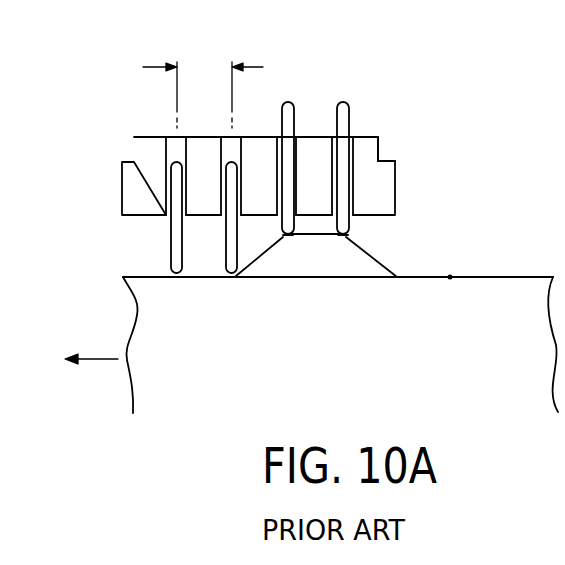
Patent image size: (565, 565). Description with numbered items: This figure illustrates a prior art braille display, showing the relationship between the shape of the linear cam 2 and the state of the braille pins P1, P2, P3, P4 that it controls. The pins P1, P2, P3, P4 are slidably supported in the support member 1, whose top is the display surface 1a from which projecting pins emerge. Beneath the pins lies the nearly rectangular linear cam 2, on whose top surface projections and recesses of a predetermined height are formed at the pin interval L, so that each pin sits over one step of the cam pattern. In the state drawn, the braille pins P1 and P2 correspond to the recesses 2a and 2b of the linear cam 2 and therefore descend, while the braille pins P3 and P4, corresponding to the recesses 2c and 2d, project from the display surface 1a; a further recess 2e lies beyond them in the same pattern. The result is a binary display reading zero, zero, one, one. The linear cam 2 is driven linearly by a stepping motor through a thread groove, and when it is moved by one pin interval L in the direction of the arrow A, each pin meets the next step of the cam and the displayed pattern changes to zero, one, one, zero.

The support member 1 is at (388, 188).
The display surface 1a is at (384, 137).
The linear cam 2 is at (517, 293).
The recess of linear cam 2a is at (177, 277).
The recess of linear cam 2b is at (233, 277).
The recess of linear cam 2c is at (287, 235).
The recess of linear cam 2d is at (343, 236).
The recess of linear cam 2e is at (397, 278).
The braille pin P1 is at (170, 246).
The braille pin P2 is at (224, 251).
The braille pin P3 is at (285, 102).
The braille pin P4 is at (346, 102).
The pin interval L is at (203, 82).
The direction of arrow A is at (80, 361).